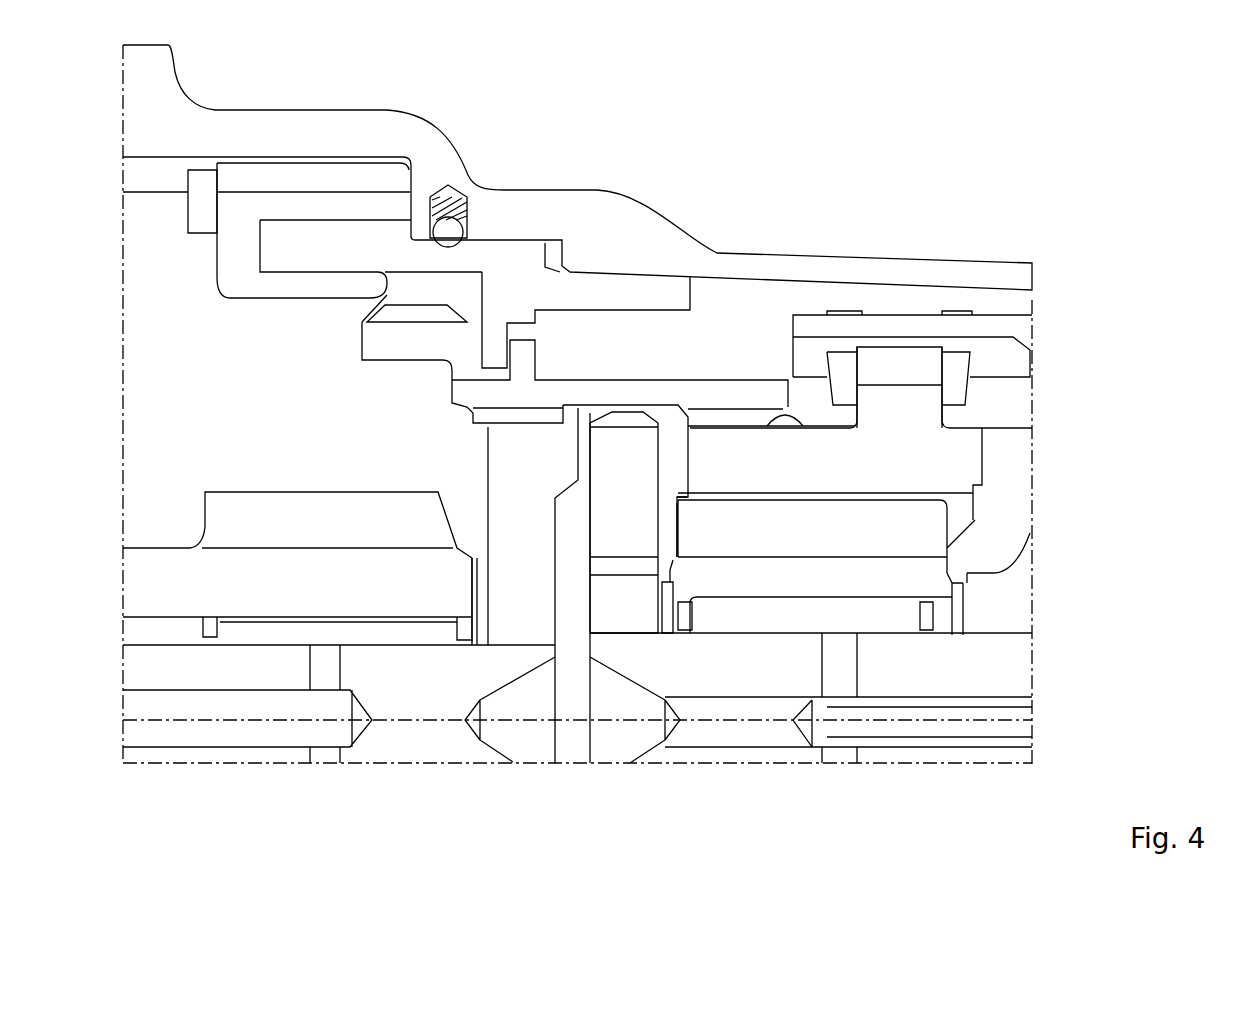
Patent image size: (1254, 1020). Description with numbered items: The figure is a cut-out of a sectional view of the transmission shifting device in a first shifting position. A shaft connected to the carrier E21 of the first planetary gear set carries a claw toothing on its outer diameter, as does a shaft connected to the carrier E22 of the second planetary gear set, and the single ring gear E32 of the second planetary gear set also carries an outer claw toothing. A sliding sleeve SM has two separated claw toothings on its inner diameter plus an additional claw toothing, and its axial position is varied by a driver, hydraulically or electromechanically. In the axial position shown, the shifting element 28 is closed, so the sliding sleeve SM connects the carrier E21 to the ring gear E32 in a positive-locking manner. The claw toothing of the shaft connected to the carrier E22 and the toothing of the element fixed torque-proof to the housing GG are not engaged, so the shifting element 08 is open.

The housing GG is at (373, 130).
The shifting element 08 is at (383, 263).
The sliding sleeve SM is at (720, 400).
The shifting element 28 is at (532, 433).
The carrier of the first planetary gear set E21 is at (422, 692).
The carrier of the second planetary gear set E22 is at (977, 667).
The ring gear of the second planetary gear set E32 is at (908, 462).